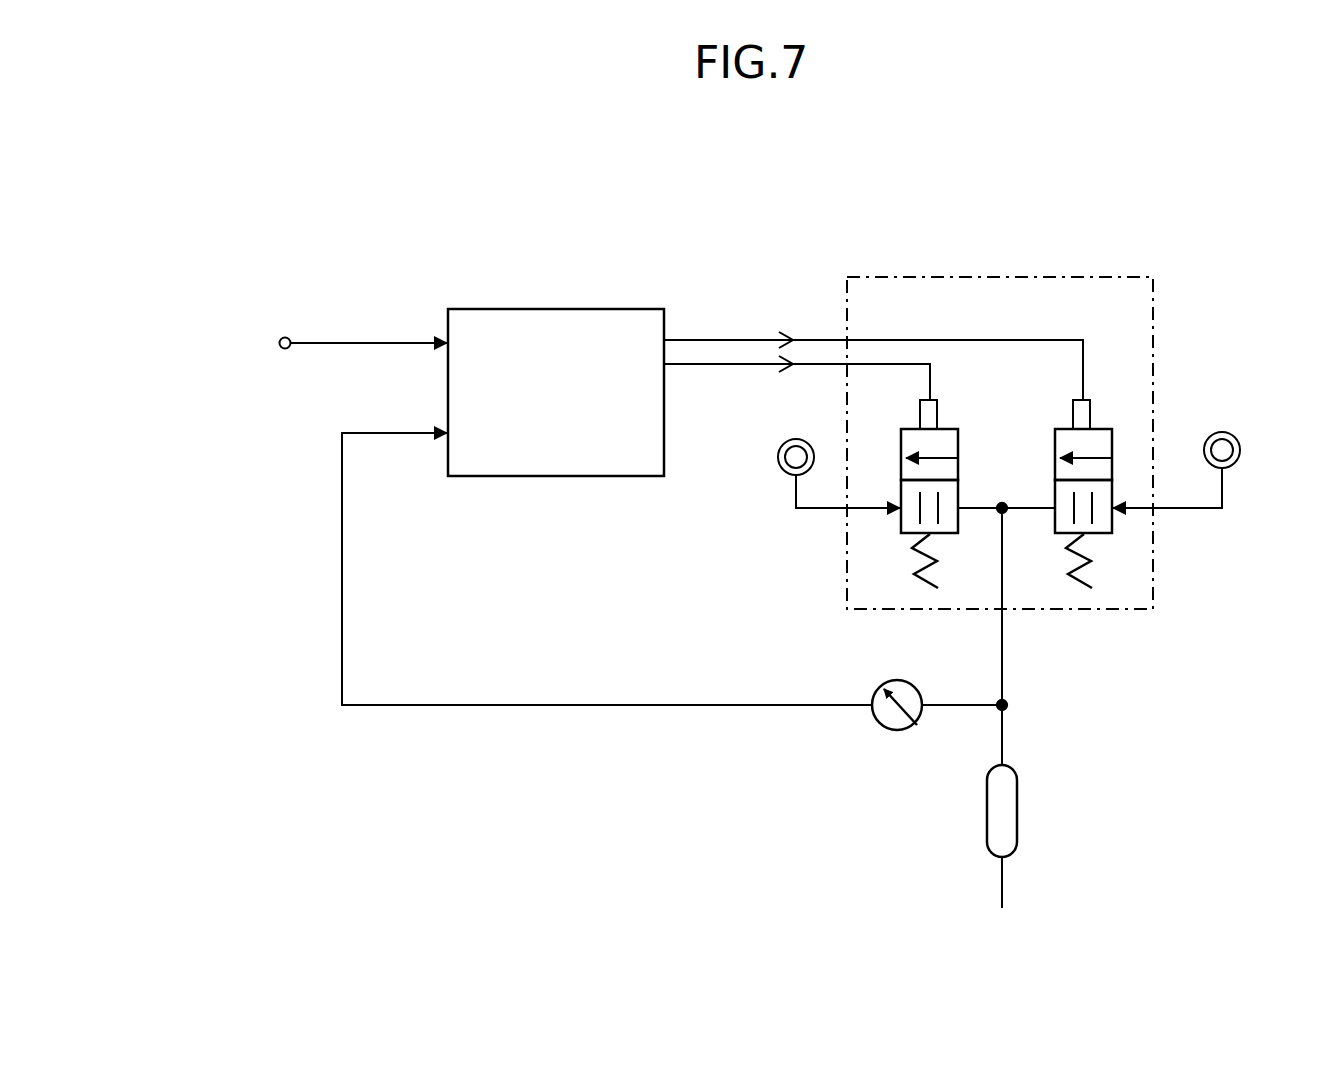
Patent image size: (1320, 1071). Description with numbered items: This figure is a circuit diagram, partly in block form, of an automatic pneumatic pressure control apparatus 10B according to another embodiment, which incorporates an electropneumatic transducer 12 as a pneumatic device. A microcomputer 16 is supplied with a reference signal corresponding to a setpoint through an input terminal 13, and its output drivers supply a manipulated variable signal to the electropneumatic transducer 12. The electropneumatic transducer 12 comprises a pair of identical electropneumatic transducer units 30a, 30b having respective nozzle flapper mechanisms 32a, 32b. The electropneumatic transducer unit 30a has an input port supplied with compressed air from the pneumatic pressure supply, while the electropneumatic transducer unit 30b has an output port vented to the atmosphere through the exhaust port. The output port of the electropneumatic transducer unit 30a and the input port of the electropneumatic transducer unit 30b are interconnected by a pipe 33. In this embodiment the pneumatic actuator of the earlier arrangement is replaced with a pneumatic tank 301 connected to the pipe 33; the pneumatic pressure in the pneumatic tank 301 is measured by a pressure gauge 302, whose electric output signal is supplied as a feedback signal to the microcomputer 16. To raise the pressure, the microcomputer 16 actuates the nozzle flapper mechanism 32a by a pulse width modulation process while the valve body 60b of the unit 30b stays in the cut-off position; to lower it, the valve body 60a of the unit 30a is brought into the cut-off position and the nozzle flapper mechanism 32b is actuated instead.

The automatic pneumatic pressure control apparatus 10B is at (782, 201).
The electropneumatic transducer 12 is at (1082, 276).
The input terminal 13 is at (280, 352).
The microcomputer 16 is at (586, 309).
The nozzle flapper mechanism 32a is at (1090, 400).
The nozzle flapper mechanism 32b is at (936, 400).
The electropneumatic transducer unit 30a is at (1118, 526).
The electropneumatic transducer unit 30b is at (898, 530).
The valve body 60a is at (1048, 466).
The valve body 60b is at (958, 498).
The pipe 33 is at (1006, 592).
The pneumatic tank 301 is at (1017, 810).
The pressure gauge 302 is at (915, 724).